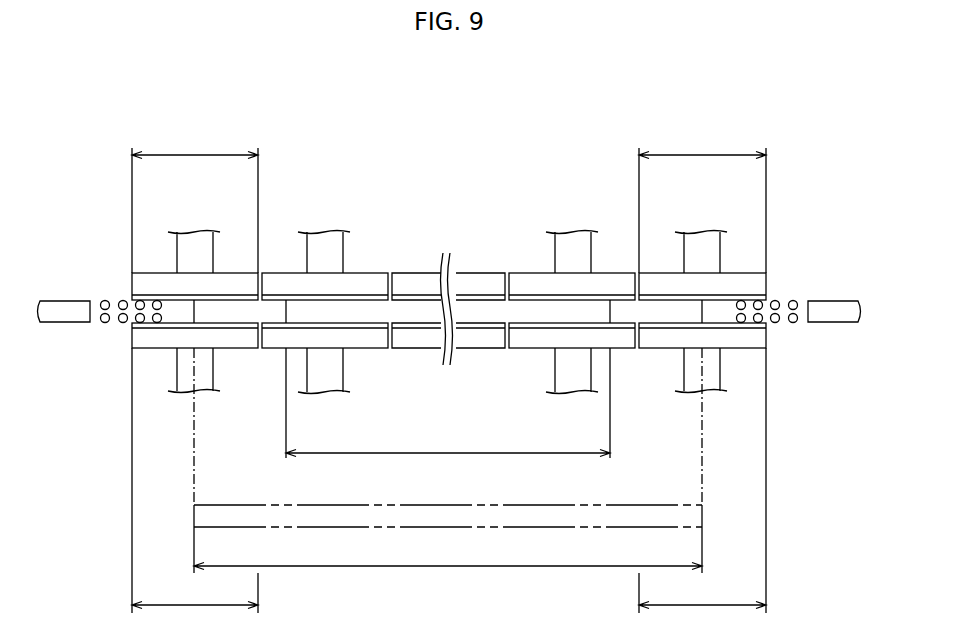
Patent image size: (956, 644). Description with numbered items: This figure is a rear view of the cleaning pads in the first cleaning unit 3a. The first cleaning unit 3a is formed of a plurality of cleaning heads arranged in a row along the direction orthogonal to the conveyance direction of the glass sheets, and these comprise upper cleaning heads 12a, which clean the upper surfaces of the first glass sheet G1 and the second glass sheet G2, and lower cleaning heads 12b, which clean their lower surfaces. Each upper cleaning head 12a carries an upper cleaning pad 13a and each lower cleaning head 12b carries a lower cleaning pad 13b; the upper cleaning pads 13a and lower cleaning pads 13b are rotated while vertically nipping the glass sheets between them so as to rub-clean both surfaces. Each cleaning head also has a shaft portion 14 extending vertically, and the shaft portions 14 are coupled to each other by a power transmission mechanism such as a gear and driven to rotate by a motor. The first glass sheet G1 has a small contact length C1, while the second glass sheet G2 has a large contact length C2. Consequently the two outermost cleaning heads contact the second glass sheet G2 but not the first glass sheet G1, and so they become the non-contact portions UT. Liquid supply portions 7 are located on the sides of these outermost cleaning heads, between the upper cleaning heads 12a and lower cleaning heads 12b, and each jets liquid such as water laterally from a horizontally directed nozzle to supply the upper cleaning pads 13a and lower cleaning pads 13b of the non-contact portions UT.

The first cleaning unit 3a is at (513, 159).
The liquid supply portion 7 is at (60, 313).
The upper cleaning head 12a is at (147, 284).
The lower cleaning head 12b is at (237, 340).
The upper cleaning pad 13a is at (240, 297).
The lower cleaning pad 13b is at (134, 325).
The shaft portion 14 is at (195, 240).
The non-contact portion UT is at (449, 383).
The contact length of first glass sheet C1 is at (448, 393).
The contact length of second glass sheet C2 is at (448, 449).
The first glass sheet G1 is at (463, 310).
The second glass sheet G2 is at (637, 502).